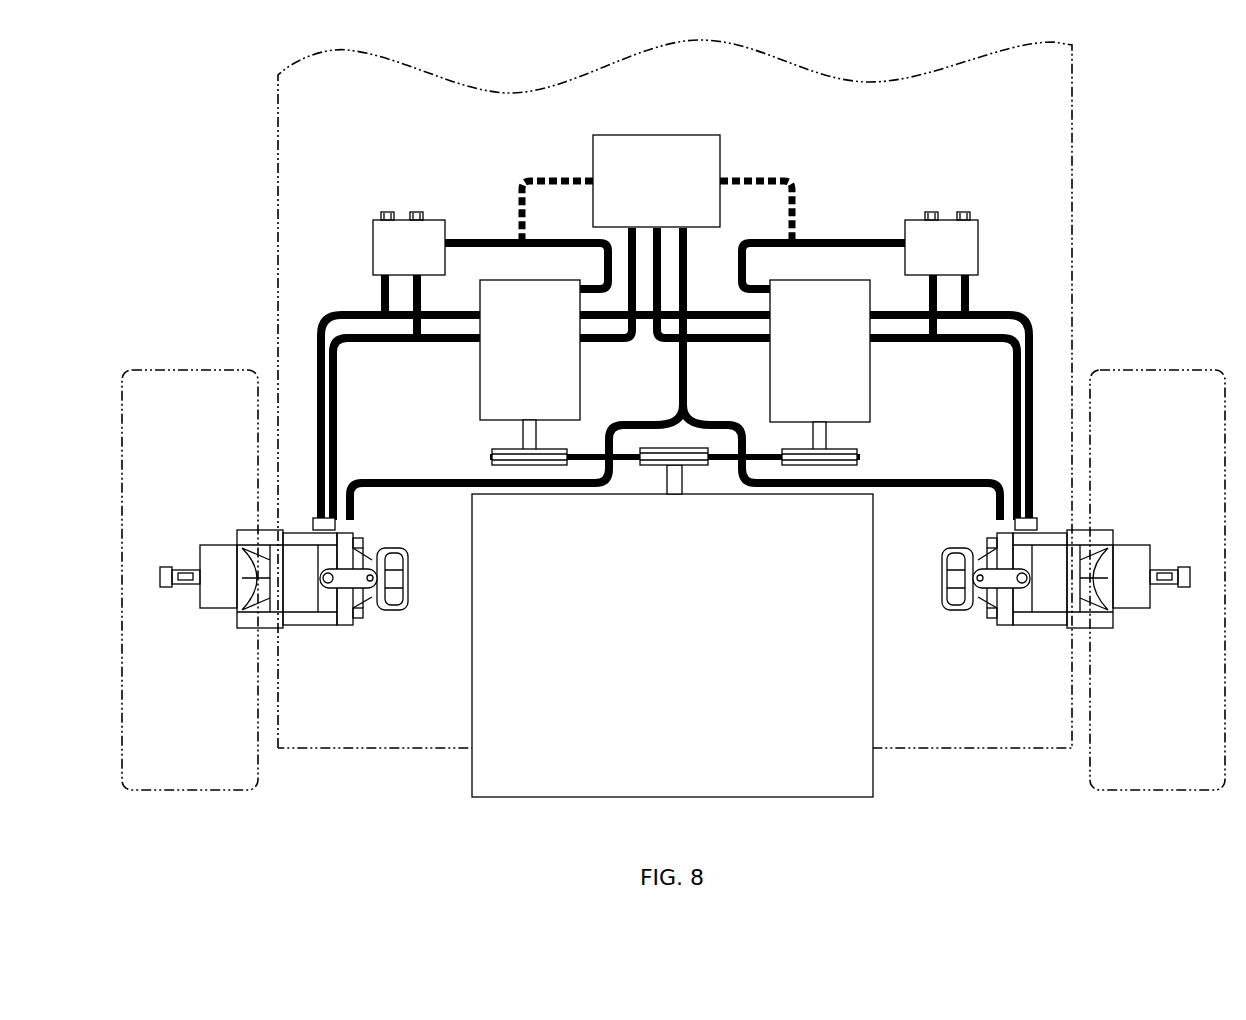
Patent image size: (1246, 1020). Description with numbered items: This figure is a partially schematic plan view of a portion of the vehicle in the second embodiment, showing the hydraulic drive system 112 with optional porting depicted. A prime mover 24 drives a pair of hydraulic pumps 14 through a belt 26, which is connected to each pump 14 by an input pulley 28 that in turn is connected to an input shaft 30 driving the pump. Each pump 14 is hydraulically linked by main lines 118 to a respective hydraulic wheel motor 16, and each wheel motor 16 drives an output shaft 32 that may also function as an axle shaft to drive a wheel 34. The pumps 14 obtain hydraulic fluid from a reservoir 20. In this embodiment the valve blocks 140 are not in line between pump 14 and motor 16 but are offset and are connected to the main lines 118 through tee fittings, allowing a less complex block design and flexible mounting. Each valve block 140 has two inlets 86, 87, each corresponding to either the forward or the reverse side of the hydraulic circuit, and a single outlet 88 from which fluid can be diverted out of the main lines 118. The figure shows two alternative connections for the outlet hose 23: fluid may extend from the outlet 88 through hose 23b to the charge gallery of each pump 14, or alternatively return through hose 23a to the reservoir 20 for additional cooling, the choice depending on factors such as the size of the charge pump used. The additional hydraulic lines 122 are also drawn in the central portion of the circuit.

The hydraulic drive system 112 is at (1100, 194).
The wheel 34 is at (192, 790).
The main lines 118 is at (345, 345).
The hydraulic lines 122 is at (600, 318).
The outlet 88 is at (447, 238).
The outlet hose 23 is at (827, 240).
The hose 23a is at (779, 177).
The hose 23b is at (745, 240).
The inlet 86 is at (378, 278).
The inlet 87 is at (423, 279).
The reservoir 20 is at (670, 194).
The valve block 140 is at (389, 256).
The hydraulic pump 14 is at (517, 361).
The prime mover 24 is at (659, 653).
The input shaft 30 is at (520, 435).
The input pulley 28 is at (550, 467).
The belt 26 is at (715, 467).
The hydraulic wheel motor 16 is at (343, 626).
The output shaft 32 is at (187, 590).